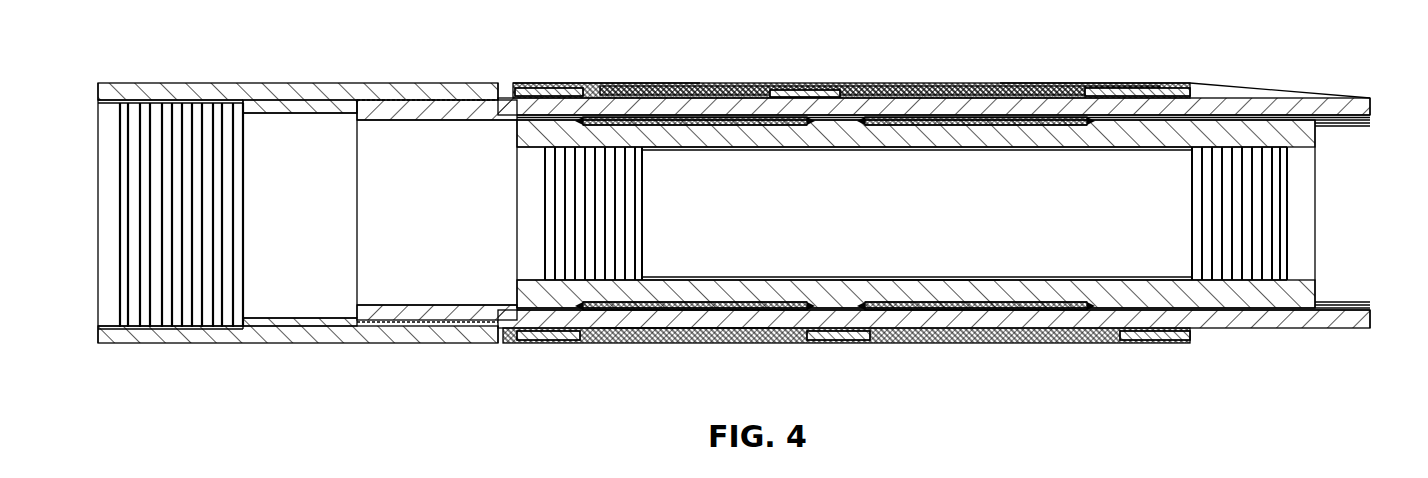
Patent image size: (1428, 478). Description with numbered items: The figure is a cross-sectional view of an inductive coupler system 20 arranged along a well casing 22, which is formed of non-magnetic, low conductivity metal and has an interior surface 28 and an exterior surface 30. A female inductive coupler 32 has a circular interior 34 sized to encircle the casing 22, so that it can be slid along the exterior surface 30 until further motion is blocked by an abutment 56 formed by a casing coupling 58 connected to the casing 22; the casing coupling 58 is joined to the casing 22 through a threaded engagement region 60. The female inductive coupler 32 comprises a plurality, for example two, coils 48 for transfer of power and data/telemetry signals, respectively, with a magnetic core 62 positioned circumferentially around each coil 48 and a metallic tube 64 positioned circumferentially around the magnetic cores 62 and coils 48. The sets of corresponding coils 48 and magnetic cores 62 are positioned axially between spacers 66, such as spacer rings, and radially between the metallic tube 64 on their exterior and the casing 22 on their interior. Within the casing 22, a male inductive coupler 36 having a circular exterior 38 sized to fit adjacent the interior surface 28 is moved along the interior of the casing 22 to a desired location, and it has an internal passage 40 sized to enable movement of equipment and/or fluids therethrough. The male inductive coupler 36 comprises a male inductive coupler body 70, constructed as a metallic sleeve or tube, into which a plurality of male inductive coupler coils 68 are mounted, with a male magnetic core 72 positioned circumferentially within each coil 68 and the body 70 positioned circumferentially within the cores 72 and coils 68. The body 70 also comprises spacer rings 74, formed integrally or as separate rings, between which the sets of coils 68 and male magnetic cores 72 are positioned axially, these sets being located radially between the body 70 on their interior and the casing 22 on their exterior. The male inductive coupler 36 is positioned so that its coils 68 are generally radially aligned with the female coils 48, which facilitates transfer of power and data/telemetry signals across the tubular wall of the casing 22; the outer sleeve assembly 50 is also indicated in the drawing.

The inductive coupler system 20 is at (1240, 56).
The casing 22 is at (1340, 97).
The interior surface 28 is at (1345, 306).
The exterior surface 30 is at (1346, 330).
The female inductive coupler 32 is at (617, 68).
The circular interior 34 is at (1172, 343).
The male inductive coupler 36 is at (683, 311).
The circular exterior 38 is at (1145, 280).
The internal passage 40 is at (913, 218).
The coils 48 is at (678, 96).
The outer sleeve assembly 50 is at (1058, 75).
The abutment 56 is at (512, 86).
The casing coupling 58 is at (262, 84).
The threaded engagement region 60 is at (400, 325).
The magnetic core 62 is at (700, 95).
The metallic tube 64 is at (782, 90).
The spacers 66 is at (552, 343).
The male inductive coupler coils 68 is at (745, 302).
The male inductive coupler body 70 is at (915, 278).
The male magnetic core 72 is at (720, 300).
The spacer rings 74 is at (572, 300).